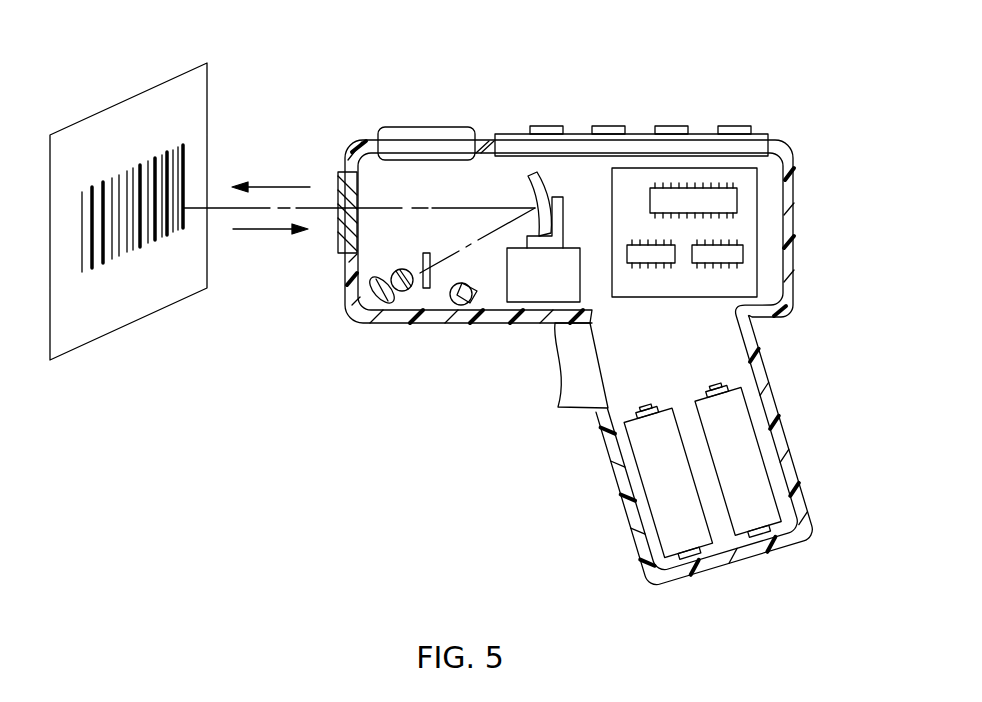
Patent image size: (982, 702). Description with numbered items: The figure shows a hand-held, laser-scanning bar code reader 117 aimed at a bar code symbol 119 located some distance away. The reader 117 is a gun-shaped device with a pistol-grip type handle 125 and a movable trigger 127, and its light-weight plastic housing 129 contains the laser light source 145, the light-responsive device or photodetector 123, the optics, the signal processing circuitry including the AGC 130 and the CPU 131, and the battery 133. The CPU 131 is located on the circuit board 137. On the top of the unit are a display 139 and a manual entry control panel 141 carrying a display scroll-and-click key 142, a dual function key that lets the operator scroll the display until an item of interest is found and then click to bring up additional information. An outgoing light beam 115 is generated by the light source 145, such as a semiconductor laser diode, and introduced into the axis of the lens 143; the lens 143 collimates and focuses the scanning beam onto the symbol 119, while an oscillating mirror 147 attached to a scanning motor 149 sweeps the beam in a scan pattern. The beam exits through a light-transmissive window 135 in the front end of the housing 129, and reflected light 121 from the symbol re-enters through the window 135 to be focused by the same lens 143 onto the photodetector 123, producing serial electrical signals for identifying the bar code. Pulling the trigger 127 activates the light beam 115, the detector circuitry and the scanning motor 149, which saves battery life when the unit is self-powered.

The outgoing light beam 115 is at (278, 183).
The reader 117 is at (606, 362).
The bar code symbol 119 is at (140, 162).
The reflected light 121 is at (262, 232).
The light-responsive device 123 is at (372, 287).
The handle 125 is at (627, 515).
The trigger 127 is at (562, 387).
The housing 129 is at (795, 212).
The AGC 130 is at (743, 250).
The CPU 131 is at (658, 198).
The battery 133 is at (737, 427).
The light-transmissive window 135 is at (347, 197).
The circuit board 137 is at (758, 177).
The display 139 is at (418, 127).
The manual entry control panel 141 is at (700, 142).
The display scroll-and-click key 142 is at (742, 126).
The lens 143 is at (407, 293).
The light source 145 is at (455, 295).
The oscillating mirror 147 is at (548, 185).
The scanning motor 149 is at (545, 292).